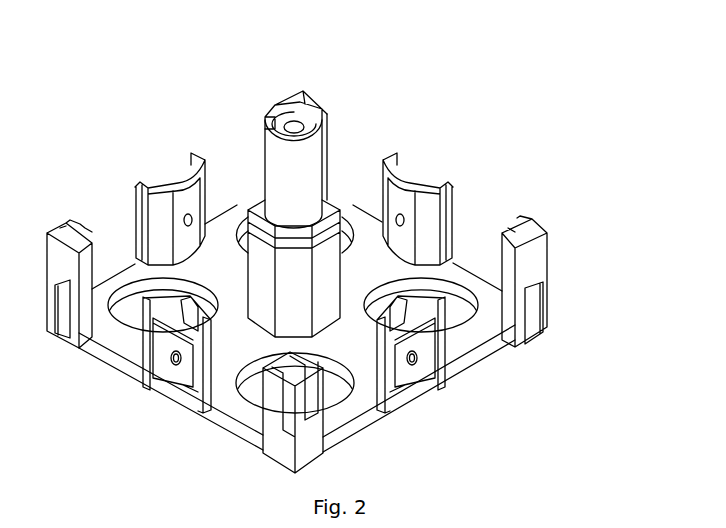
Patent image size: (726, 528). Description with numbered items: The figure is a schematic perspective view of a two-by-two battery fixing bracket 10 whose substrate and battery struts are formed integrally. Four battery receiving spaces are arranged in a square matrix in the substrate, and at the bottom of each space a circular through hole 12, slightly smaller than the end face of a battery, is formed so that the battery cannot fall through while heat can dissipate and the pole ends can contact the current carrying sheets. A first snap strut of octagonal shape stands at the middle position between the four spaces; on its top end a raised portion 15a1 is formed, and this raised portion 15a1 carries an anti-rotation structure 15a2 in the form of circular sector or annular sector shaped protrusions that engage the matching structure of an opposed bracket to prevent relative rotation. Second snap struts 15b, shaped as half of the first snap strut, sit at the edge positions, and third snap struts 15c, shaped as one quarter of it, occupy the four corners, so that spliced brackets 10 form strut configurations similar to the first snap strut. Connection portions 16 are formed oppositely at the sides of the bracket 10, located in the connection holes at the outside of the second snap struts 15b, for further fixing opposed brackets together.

The battery fixing bracket 10 is at (341, 245).
The through hole 12 is at (457, 317).
The raised portion 15a1 is at (293, 188).
The anti-rotation structure 15a2 is at (277, 103).
The second snap strut 15b is at (420, 342).
The third snap strut 15c is at (530, 258).
The connection portion 16 is at (175, 364).